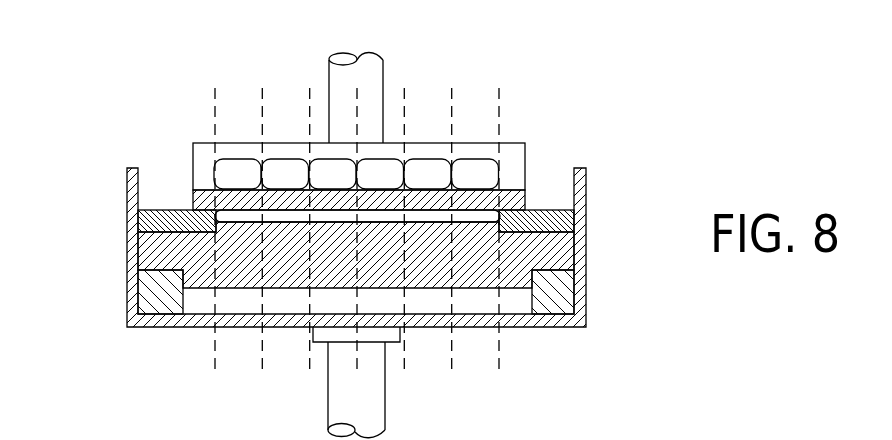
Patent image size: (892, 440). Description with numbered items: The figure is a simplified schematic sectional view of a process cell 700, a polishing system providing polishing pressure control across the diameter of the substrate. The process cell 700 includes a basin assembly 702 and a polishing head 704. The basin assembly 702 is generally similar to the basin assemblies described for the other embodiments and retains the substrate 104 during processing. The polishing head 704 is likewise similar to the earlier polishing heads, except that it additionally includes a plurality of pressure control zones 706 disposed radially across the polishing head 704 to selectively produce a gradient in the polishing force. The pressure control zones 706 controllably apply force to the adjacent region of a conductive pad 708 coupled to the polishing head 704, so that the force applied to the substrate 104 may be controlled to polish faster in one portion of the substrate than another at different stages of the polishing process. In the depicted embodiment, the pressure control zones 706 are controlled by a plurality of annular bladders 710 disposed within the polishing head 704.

The process cell 700 is at (92, 170).
The basin assembly 702 is at (586, 300).
The polishing head 704 is at (435, 130).
The pressure control zones 706 is at (213, 86).
The conductive pad 708 is at (190, 193).
The annular bladders 710 is at (482, 178).
The substrate 104 is at (500, 216).